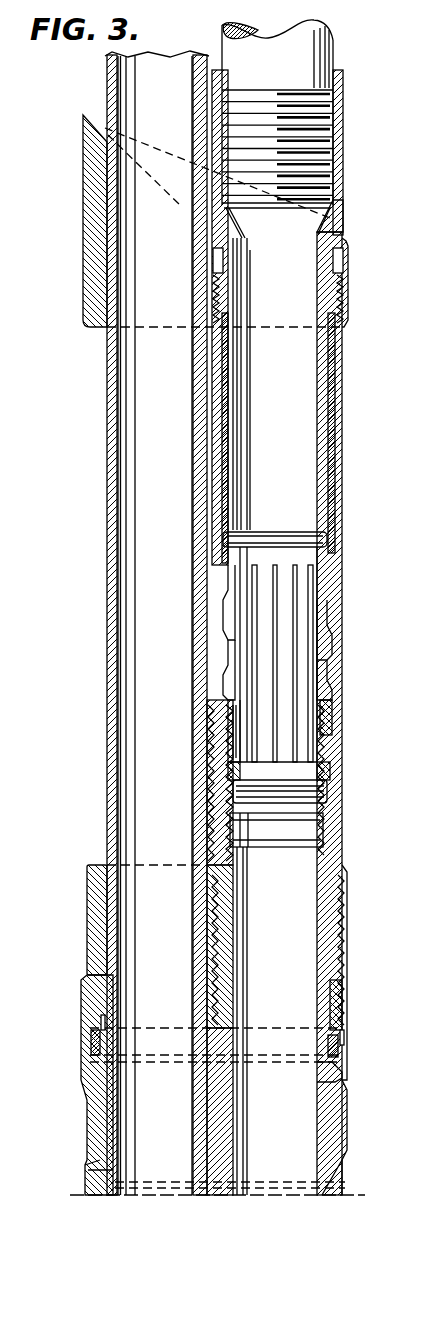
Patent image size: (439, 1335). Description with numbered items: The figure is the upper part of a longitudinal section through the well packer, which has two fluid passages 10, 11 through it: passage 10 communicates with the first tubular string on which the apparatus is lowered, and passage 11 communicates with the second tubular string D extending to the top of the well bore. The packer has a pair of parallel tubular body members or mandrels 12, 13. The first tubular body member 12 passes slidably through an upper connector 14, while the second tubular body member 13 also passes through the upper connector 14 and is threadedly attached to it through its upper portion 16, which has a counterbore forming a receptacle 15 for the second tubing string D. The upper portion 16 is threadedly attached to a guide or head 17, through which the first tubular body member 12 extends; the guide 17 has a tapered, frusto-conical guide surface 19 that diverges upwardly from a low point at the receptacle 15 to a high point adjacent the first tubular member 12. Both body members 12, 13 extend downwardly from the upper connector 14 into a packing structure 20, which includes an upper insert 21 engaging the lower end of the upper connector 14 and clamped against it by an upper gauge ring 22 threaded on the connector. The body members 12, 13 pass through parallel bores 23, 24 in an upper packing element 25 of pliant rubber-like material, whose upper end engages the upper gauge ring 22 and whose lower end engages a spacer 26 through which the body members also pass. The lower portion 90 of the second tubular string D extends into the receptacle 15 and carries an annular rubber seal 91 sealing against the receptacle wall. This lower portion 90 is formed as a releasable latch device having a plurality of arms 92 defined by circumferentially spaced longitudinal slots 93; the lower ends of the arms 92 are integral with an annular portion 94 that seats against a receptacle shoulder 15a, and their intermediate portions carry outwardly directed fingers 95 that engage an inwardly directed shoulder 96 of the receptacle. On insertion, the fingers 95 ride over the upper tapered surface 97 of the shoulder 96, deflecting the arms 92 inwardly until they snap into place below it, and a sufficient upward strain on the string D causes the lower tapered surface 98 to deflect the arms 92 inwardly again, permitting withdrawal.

The second tubular string D is at (333, 52).
The fluid passage 10 is at (170, 1115).
The fluid passage 11 is at (288, 1115).
The first tubular body member 12 is at (108, 588).
The second tubular body member 13 is at (320, 1004).
The upper connector 14 is at (92, 935).
The receptacle 15 is at (333, 715).
The receptacle shoulder 15a is at (342, 825).
The upper portion 16 is at (338, 766).
The guide 17 is at (92, 291).
The tapered guide surface 19 is at (180, 205).
The packing structure 20 is at (361, 1127).
The upper insert 21 is at (332, 1052).
The upper gauge ring 22 is at (90, 1044).
The bore 23 is at (106, 1104).
The bore 24 is at (327, 1075).
The upper packing element 25 is at (346, 1141).
The spacer 26 is at (90, 1183).
The lower portion 90 is at (343, 440).
The seal 91 is at (334, 398).
The arms 92 is at (248, 732).
The longitudinal slots 93 is at (312, 592).
The annular portion 94 is at (330, 786).
The fingers 95 is at (330, 687).
The shoulder 96 is at (331, 641).
The upper tapered surface 97 is at (226, 617).
The lower tapered surface 98 is at (225, 682).